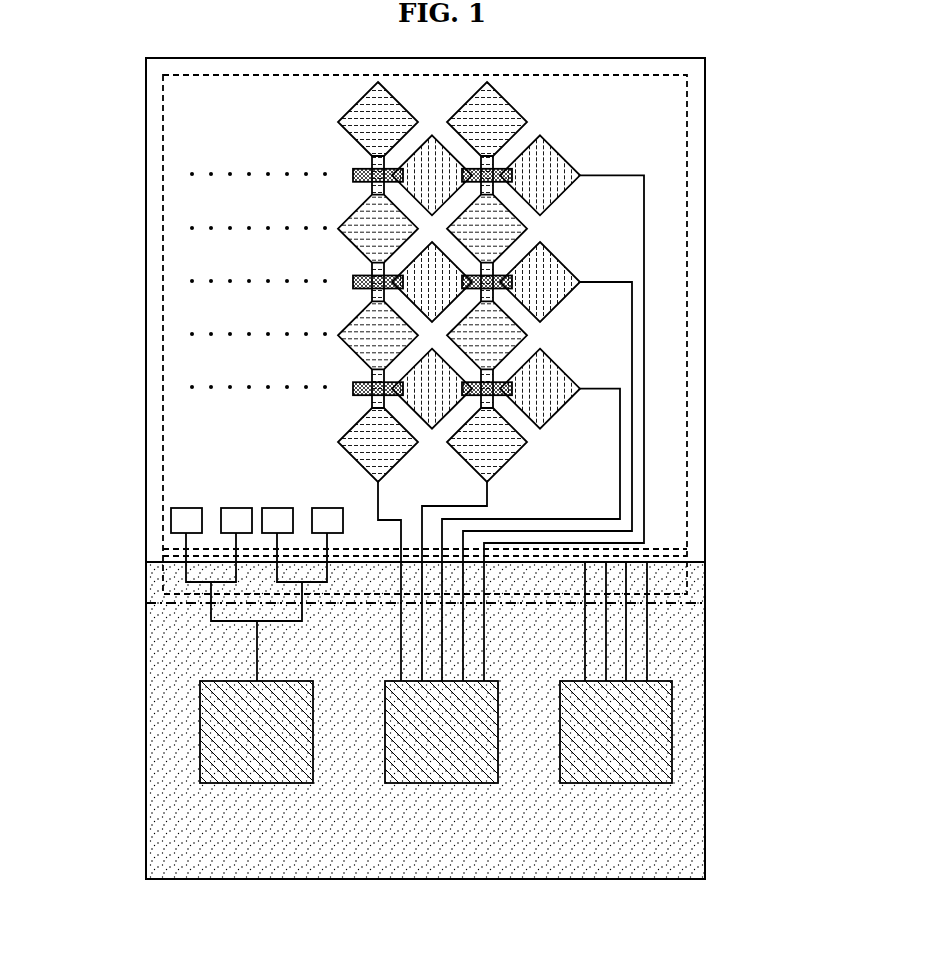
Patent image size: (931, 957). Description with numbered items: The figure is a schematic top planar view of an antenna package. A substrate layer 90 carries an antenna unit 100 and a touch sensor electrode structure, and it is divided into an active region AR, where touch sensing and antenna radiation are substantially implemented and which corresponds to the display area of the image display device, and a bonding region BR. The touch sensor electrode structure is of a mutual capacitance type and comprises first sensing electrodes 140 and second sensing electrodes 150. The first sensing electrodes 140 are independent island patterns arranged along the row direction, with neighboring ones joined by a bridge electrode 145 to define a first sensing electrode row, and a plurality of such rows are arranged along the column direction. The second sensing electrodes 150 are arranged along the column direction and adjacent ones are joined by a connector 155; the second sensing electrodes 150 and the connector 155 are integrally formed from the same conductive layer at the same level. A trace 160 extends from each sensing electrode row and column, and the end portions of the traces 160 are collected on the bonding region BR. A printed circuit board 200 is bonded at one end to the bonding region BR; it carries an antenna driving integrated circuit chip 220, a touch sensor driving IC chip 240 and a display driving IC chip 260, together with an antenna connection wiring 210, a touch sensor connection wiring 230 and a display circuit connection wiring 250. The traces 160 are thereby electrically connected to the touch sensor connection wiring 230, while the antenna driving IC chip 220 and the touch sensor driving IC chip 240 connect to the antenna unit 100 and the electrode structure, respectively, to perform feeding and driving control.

The substrate layer 90 is at (697, 458).
The antenna unit 100 is at (180, 522).
The first sensing electrodes 140 is at (558, 143).
The bridge electrode 145 is at (503, 183).
The second sensing electrodes 150 is at (507, 335).
The connector 155 is at (482, 378).
The trace 160 is at (632, 502).
The printed circuit board 200 is at (700, 848).
The antenna connection wiring 210 is at (233, 623).
The antenna driving integrated circuit chip 220 is at (258, 764).
The touch sensor connection wiring 230 is at (484, 632).
The touch sensor driving IC chip 240 is at (443, 764).
The display circuit connection wiring 250 is at (647, 663).
The display driving IC chip 260 is at (613, 764).
The active region AR is at (703, 247).
The bonding region BR is at (705, 574).